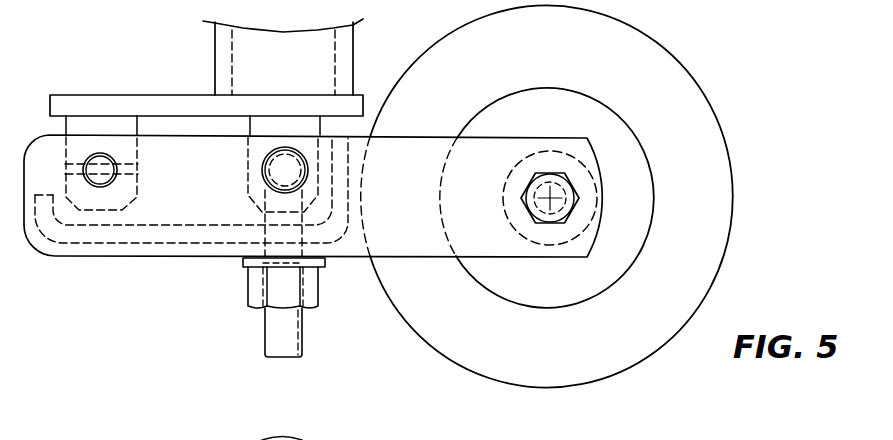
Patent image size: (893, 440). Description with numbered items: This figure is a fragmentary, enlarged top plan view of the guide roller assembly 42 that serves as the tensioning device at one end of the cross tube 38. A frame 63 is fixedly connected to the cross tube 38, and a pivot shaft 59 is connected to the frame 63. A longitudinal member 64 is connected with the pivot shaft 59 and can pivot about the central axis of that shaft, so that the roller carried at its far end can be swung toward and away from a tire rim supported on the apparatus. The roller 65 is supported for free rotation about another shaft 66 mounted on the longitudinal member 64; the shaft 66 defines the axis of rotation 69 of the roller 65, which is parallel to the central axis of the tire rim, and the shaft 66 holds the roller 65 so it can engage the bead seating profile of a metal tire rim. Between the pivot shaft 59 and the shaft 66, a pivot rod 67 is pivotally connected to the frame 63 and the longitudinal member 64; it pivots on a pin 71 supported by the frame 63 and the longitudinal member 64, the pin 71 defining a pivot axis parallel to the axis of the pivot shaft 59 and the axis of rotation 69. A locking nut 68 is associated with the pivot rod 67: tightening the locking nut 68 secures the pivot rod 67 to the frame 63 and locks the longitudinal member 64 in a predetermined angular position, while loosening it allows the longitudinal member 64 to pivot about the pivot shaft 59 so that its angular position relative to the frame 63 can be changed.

The cross tube 38 is at (328, 63).
The guide roller assembly 42 is at (718, 85).
The pivot shaft 59 is at (113, 180).
The frame 63 is at (162, 90).
The longitudinal member 64 is at (390, 228).
The roller 65 is at (713, 232).
The shaft 66 is at (594, 226).
The pivot rod 67 is at (236, 276).
The locking nut 68 is at (310, 298).
The axis of rotation 69 is at (563, 190).
The pin 71 is at (256, 166).